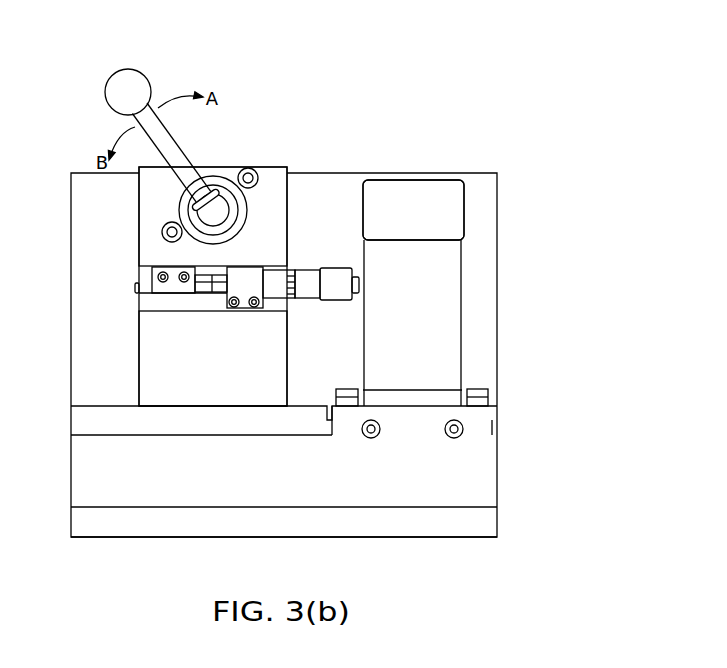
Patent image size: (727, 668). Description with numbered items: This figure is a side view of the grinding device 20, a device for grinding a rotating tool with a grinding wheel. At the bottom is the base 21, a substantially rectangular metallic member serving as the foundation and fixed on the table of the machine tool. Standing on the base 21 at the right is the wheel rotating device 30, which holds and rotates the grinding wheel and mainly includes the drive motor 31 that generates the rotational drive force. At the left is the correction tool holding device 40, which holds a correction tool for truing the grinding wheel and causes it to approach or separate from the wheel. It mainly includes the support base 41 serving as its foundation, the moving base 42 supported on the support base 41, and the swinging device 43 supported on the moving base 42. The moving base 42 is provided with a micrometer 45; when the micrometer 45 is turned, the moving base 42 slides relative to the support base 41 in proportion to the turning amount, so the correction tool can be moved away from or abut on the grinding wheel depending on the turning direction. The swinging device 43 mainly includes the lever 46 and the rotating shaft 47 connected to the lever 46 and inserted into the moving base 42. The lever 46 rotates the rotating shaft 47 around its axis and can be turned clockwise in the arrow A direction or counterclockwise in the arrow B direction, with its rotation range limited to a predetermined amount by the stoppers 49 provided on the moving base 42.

The grinding device 20 is at (284, 275).
The base 21 is at (487, 520).
The wheel rotating device 30 is at (428, 244).
The drive motor 31 is at (455, 207).
The correction tool holding device 40 is at (236, 240).
The support base 41 is at (282, 358).
The moving base 42 is at (277, 237).
The swinging device 43 is at (173, 155).
The micrometer 45 is at (334, 272).
The lever 46 is at (140, 85).
The rotating shaft 47 is at (228, 222).
The stoppers 49 is at (258, 187).